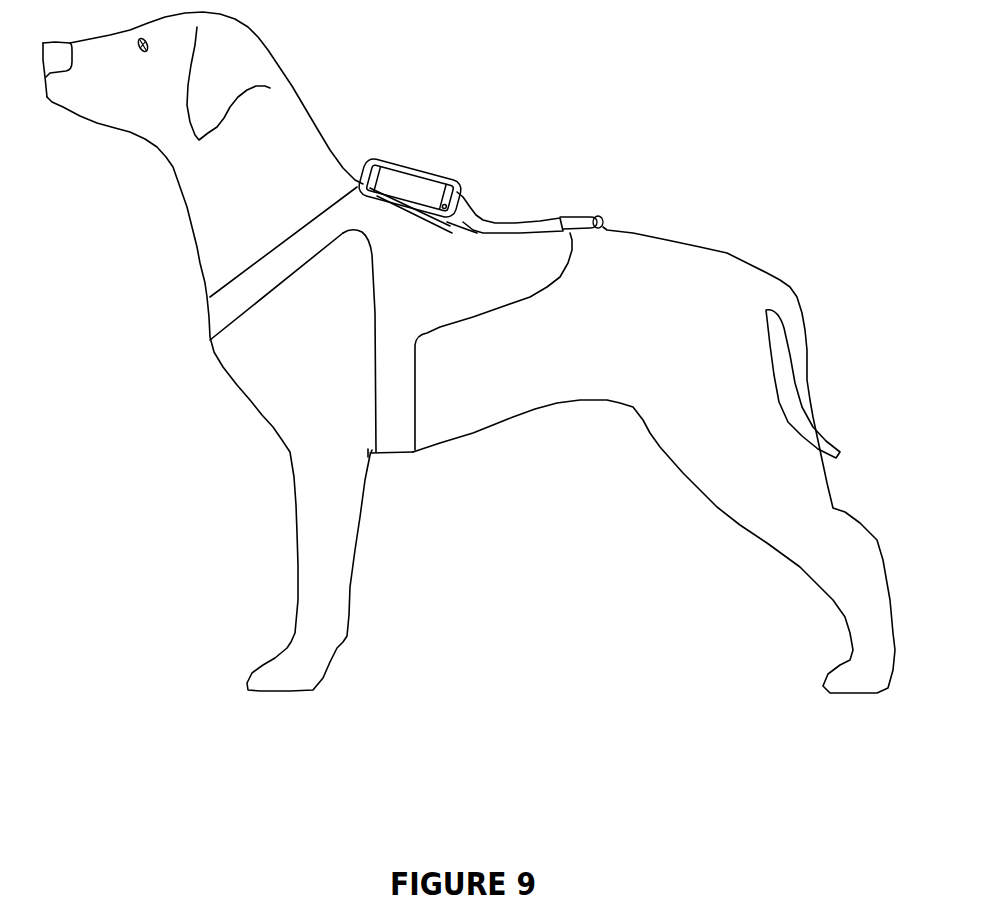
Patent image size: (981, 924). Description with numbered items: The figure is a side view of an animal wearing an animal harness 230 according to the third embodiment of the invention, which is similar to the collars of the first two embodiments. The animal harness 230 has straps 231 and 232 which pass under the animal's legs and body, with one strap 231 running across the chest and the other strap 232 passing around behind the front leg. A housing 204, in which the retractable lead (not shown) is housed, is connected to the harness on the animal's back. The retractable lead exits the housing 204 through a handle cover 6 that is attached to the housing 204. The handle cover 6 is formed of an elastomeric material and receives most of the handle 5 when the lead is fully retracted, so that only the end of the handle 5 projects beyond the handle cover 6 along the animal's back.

The housing 204 is at (406, 178).
The handle cover 6 is at (480, 219).
The handle 5 is at (581, 213).
The strap 231 is at (205, 319).
The strap 232 is at (391, 444).
The animal harness 230 is at (431, 335).